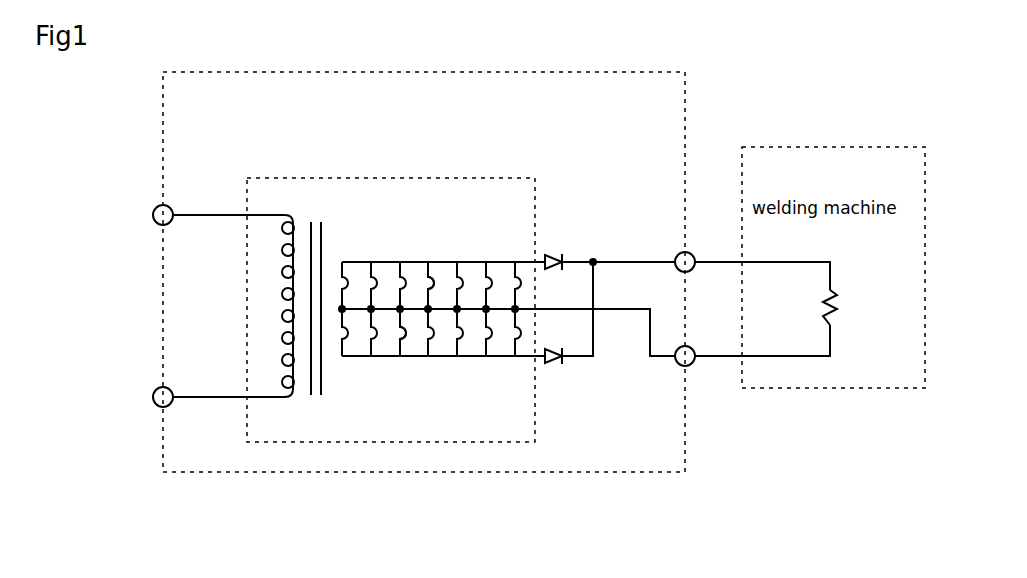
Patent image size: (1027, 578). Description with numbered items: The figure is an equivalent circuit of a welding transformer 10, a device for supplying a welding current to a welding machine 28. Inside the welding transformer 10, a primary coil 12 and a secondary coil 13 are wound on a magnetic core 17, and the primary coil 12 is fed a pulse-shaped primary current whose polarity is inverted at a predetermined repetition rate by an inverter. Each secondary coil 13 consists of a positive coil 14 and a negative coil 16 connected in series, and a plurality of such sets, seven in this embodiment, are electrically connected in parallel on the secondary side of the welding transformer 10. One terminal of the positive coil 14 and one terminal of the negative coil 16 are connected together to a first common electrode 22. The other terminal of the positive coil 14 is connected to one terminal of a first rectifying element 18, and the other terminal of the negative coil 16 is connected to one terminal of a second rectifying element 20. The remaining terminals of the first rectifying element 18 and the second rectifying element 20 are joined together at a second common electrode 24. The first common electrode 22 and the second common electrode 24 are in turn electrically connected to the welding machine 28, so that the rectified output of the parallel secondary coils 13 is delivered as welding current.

The welding transformer 10 is at (180, 178).
The primary coil 12 is at (272, 340).
The secondary coil 13 is at (355, 362).
The positive coil 14 is at (430, 268).
The negative coil 16 is at (406, 337).
The magnetic core 17 is at (322, 263).
The first rectifying element 18 is at (561, 256).
The second rectifying element 20 is at (550, 366).
The first common electrode 22 is at (690, 368).
The second common electrode 24 is at (692, 255).
The welding machine 28 is at (838, 307).